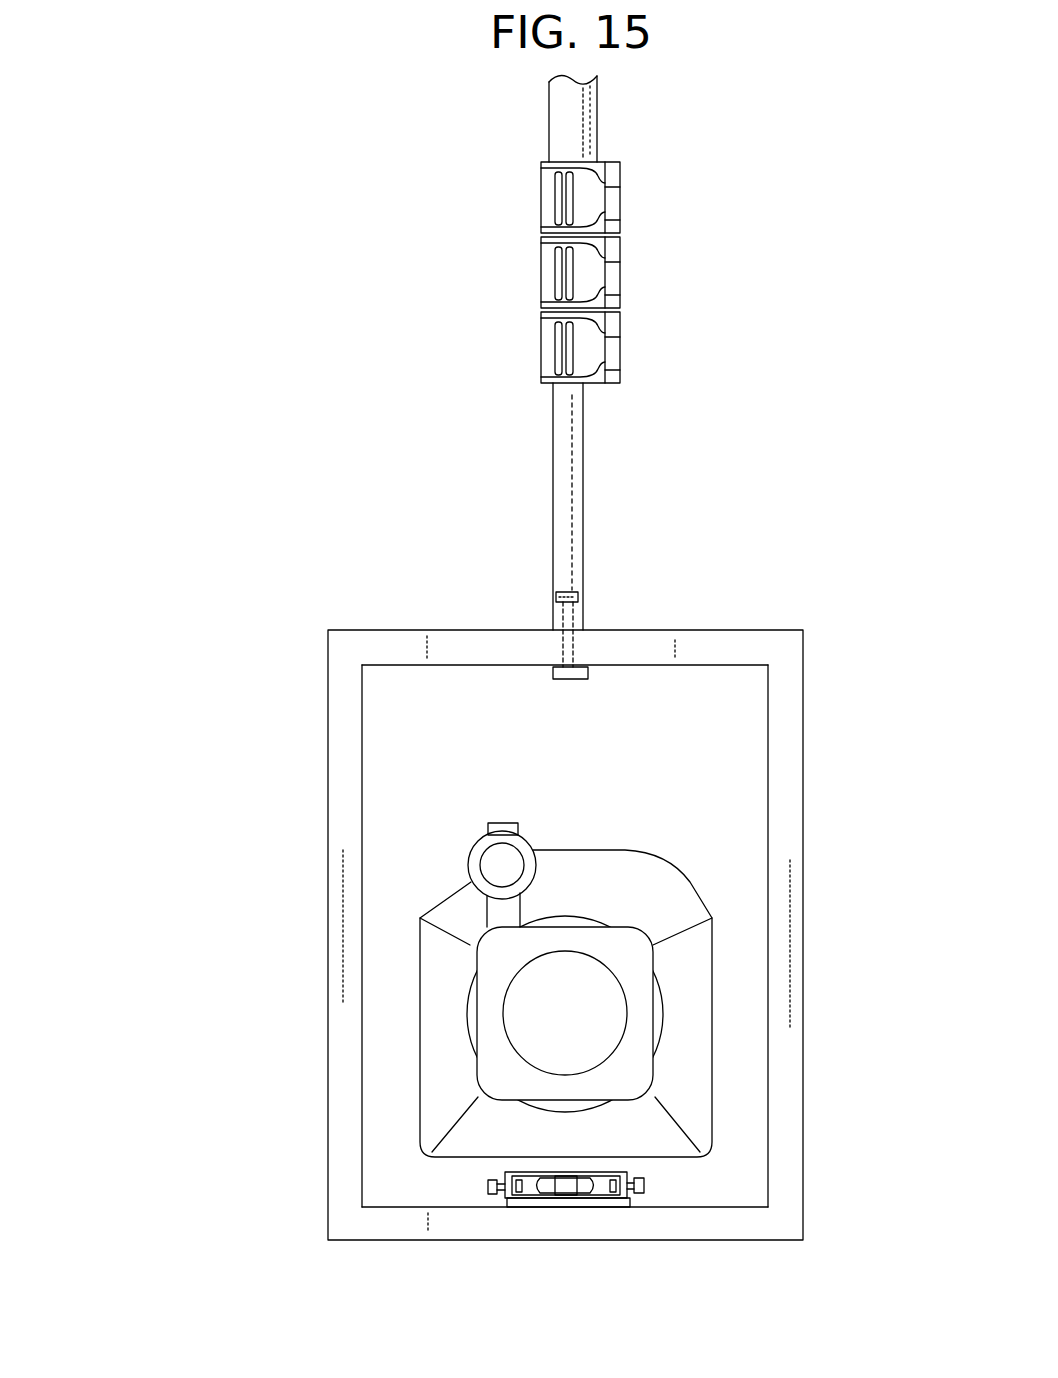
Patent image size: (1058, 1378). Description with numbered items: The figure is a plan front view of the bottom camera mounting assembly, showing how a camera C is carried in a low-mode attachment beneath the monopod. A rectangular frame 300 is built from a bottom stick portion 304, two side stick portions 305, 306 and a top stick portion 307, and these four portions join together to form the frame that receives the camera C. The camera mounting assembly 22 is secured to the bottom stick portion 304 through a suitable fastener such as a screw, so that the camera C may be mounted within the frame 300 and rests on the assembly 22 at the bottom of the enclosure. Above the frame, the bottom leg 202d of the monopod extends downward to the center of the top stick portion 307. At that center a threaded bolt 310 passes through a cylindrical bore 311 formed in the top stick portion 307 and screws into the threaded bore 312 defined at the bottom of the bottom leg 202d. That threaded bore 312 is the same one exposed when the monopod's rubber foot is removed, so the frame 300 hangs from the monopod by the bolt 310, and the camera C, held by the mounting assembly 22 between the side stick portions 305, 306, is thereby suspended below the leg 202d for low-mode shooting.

The bottom leg 202d is at (567, 497).
The threaded bore 312 is at (572, 614).
The cylindrical bore 311 is at (560, 648).
The threaded bolt 310 is at (583, 680).
The camera housing 300 is at (315, 782).
The top stick portion 307 is at (650, 650).
The side stick portion 306 is at (332, 912).
The side stick portion 305 is at (791, 885).
The bottom stick portion 304 is at (413, 1228).
The camera C is at (617, 880).
The camera mounting assembly 22 is at (647, 1192).